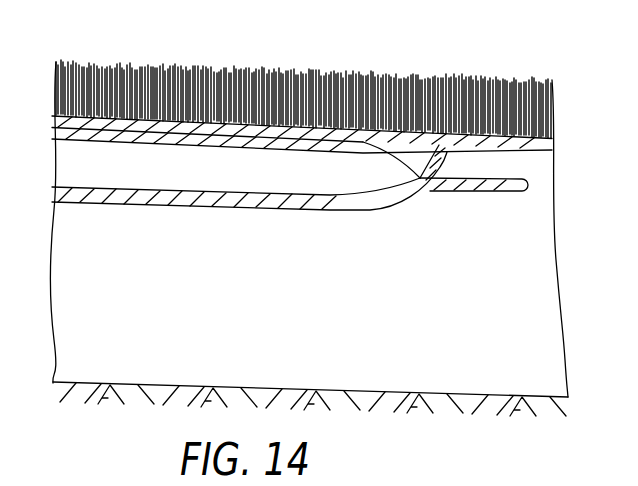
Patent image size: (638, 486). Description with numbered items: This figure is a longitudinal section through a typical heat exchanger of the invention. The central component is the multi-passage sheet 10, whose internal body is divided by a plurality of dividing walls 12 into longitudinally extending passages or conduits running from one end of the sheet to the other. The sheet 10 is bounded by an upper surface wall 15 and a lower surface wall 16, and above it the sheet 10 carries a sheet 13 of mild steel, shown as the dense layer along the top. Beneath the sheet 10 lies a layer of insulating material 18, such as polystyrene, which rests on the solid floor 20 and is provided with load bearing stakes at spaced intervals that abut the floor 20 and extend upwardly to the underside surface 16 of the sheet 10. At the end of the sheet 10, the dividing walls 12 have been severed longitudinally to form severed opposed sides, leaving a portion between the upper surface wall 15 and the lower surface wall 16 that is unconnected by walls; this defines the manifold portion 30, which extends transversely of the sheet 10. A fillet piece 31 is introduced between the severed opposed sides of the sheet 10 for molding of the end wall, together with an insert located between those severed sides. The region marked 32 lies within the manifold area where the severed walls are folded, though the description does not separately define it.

The multi-passage sheet 10 is at (213, 157).
The dividing wall 12 is at (287, 167).
The sheet of mild steel 13 is at (487, 140).
The upper surface wall 15 is at (418, 165).
The lower surface wall 16 is at (413, 193).
The layer of insulating material 18 is at (200, 312).
The solid floor 20 is at (450, 402).
The manifold portion 30 is at (367, 160).
The fillet piece 31 is at (495, 187).
The loop opening 32 is at (414, 175).